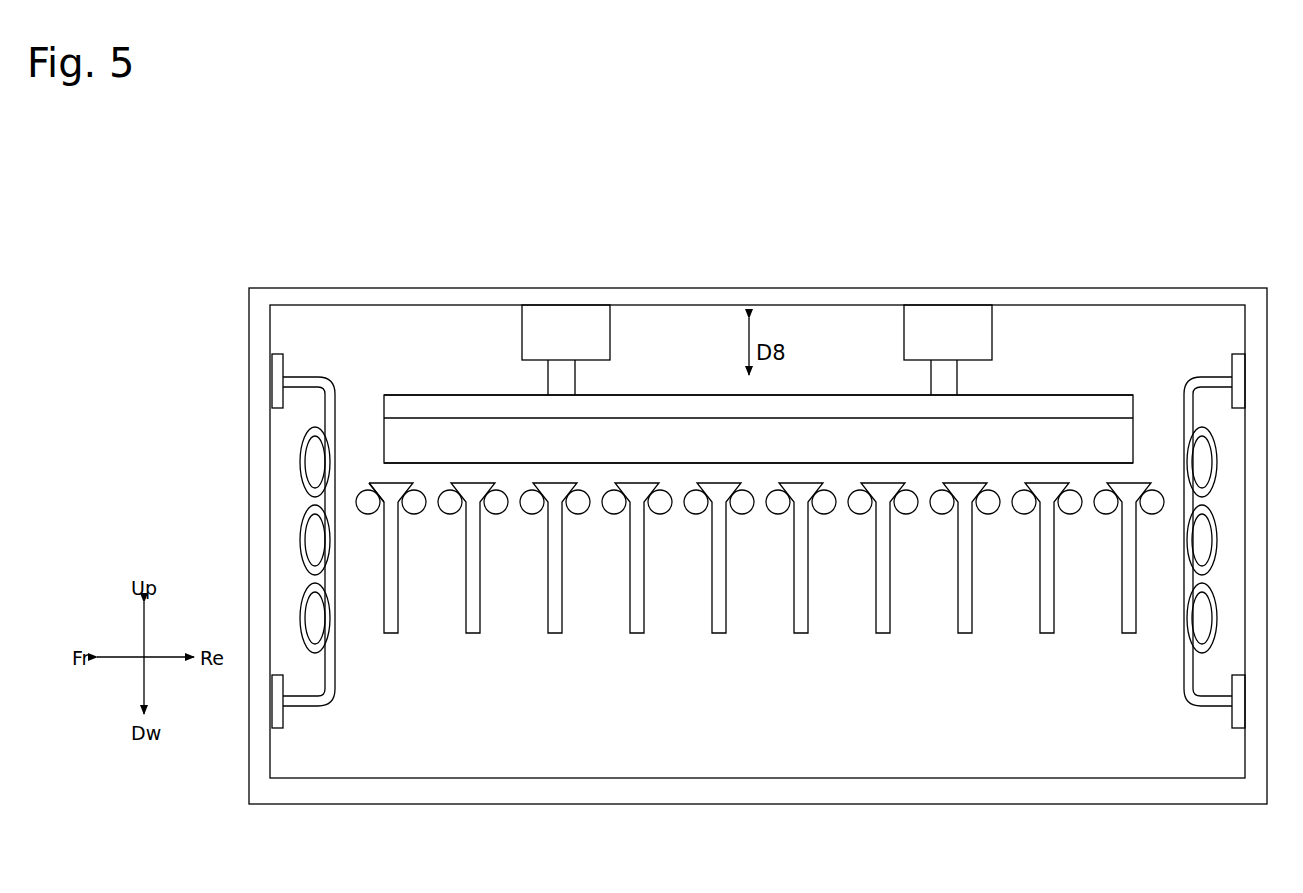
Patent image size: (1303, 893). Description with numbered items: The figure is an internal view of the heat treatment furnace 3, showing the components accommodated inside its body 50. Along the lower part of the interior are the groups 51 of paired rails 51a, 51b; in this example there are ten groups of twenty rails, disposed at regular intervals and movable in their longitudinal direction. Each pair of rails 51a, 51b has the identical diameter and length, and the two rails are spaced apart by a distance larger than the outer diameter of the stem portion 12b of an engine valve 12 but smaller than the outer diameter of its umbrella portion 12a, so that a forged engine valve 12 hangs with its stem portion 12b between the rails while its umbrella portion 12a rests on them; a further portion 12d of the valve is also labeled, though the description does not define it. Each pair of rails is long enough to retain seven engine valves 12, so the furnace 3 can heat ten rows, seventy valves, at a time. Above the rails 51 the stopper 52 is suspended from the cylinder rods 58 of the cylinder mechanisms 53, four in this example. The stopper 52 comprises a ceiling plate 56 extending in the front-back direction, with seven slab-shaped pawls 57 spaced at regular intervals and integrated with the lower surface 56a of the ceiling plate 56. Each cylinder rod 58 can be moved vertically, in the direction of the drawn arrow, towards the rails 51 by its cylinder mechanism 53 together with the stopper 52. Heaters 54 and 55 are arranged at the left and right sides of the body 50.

The heat treatment furnace 3 is at (227, 203).
The body 50 is at (790, 297).
The engine valve 12 is at (754, 602).
The umbrella portion 12a is at (392, 492).
The stem portion 12b is at (395, 612).
The cartridge shoulder 12d is at (365, 504).
The group of paired rails 51 is at (754, 516).
The paired rail 51a is at (365, 500).
The paired rail 51b is at (418, 500).
The stopper 52 is at (1058, 392).
The cylinder mechanism 53 is at (565, 322).
The heater 54 is at (318, 701).
The heater 55 is at (1208, 701).
The ceiling plate 56 is at (1095, 402).
The lower surface 56a is at (1124, 417).
The pawl 57 is at (838, 445).
The cylinder rod 58 is at (568, 381).